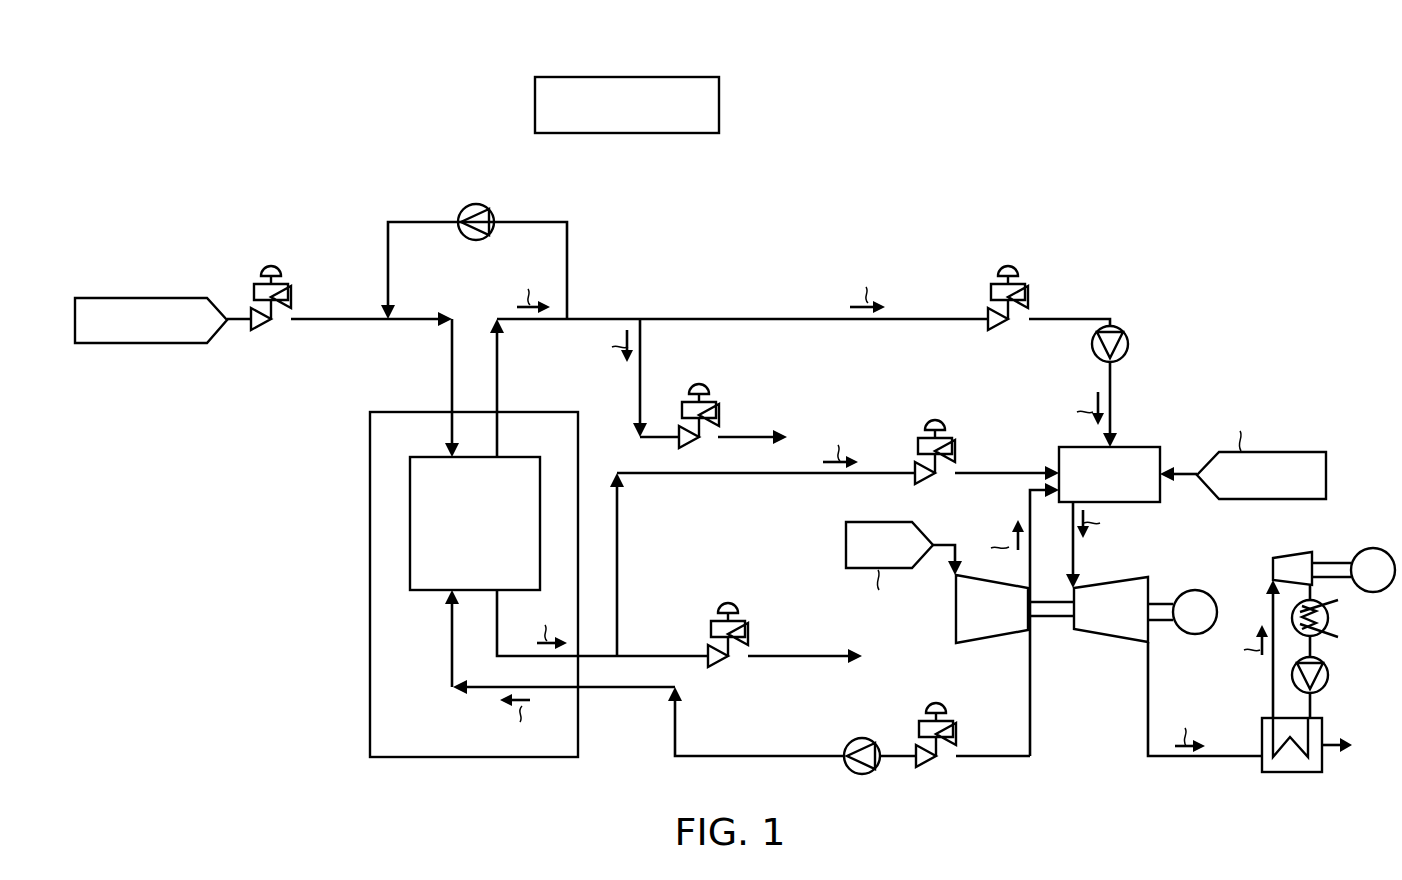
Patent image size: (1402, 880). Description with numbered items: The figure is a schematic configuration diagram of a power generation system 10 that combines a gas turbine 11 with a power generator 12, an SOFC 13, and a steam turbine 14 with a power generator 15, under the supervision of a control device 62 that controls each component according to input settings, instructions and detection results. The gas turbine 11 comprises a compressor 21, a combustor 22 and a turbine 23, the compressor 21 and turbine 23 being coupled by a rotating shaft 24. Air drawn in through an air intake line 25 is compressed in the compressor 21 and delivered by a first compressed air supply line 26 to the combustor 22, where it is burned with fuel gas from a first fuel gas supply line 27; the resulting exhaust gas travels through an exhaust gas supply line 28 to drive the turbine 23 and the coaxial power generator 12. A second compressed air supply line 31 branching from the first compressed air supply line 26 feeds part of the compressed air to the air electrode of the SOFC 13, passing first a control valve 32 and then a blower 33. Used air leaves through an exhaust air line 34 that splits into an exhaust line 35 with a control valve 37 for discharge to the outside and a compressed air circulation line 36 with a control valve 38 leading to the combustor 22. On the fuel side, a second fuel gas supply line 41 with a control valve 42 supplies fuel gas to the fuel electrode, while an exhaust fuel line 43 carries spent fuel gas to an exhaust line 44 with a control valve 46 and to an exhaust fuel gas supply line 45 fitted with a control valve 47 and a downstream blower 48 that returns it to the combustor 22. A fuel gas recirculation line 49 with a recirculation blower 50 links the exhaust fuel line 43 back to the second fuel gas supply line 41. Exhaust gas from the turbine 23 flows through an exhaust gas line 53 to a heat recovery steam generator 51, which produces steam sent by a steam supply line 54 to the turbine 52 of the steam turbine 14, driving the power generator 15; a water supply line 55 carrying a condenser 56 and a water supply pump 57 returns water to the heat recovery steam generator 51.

The power generation system 10 is at (967, 156).
The gas turbine 11 is at (1086, 601).
The power generator 12 is at (1193, 634).
The SOFC 13 is at (405, 510).
The steam turbine 14 is at (1333, 540).
The power generator 15 is at (1374, 548).
The compressor 21 is at (991, 640).
The combustor 22 is at (1055, 455).
The turbine 23 is at (1111, 640).
The rotating shaft 24 is at (1053, 620).
The air intake line 25 is at (946, 544).
The first compressed air supply line 26 is at (1032, 498).
The first fuel gas supply line 27 is at (1184, 473).
The exhaust gas supply line 28 is at (1076, 549).
The second compressed air supply line 31 is at (784, 758).
The control valve 32 is at (936, 702).
The blower 33 is at (863, 738).
The exhaust air line 34 is at (494, 622).
The exhaust line 35 is at (658, 656).
The compressed air circulation line 36 is at (813, 476).
The control valve 37 is at (729, 600).
The control valve 38 is at (936, 418).
The second fuel gas supply line 41 is at (339, 318).
The control valve 42 is at (272, 262).
The exhaust fuel line 43 is at (532, 321).
The exhaust line 44 is at (758, 437).
The exhaust fuel gas supply line 45 is at (806, 318).
The control valve 46 is at (699, 383).
The control valve 47 is at (1016, 268).
The blower 48 is at (1092, 345).
The fuel gas recirculation line 49 is at (552, 221).
The recirculation blower 50 is at (477, 204).
The heat recovery steam generator 51 is at (1322, 767).
The turbine 52 is at (1271, 565).
The exhaust gas line 53 is at (1173, 758).
The steam supply line 54 is at (1272, 687).
The water supply line 55 is at (1310, 701).
The condenser 56 is at (1328, 620).
The water supply pump 57 is at (1328, 676).
The control device 62 is at (628, 77).